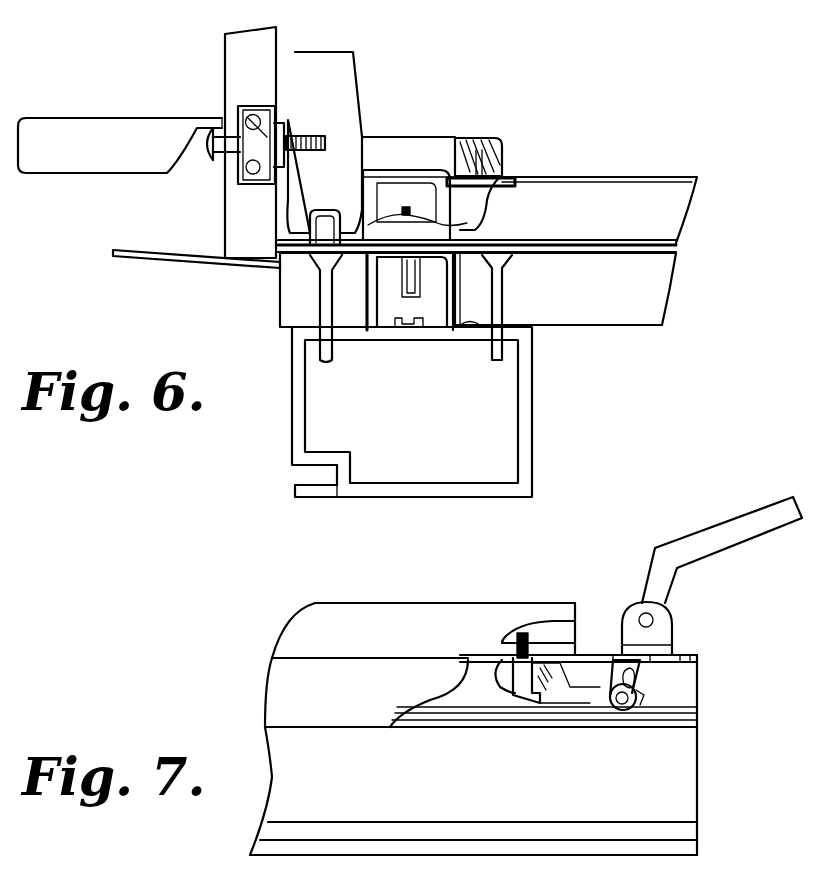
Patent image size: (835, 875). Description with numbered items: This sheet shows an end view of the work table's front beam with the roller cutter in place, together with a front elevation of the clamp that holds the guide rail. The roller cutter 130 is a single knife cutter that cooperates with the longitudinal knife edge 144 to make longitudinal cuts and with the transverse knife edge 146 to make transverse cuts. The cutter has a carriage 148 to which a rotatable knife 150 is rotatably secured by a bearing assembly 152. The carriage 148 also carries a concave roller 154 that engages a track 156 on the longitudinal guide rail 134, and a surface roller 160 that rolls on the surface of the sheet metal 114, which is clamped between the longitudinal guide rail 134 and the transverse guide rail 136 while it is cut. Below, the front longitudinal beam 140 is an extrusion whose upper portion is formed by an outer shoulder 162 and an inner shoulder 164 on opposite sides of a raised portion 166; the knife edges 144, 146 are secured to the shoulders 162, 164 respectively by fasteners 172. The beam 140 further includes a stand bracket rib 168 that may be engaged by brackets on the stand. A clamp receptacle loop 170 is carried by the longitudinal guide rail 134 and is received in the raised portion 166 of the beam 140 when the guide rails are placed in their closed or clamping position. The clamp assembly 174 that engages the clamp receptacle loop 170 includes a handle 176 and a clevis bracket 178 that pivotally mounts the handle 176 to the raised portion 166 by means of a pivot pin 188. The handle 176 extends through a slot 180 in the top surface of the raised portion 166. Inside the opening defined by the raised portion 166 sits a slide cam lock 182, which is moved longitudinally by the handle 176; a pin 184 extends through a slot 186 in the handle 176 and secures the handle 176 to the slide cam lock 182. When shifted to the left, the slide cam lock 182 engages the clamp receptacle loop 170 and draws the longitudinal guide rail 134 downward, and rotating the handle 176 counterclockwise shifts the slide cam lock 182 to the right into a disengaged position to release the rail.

In FIG. 6, the sheet metal 114 is at (638, 237).
In FIG. 6, the roller cutter 130 is at (95, 125).
In FIG. 6, the longitudinal guide rail 134 is at (415, 185).
In FIG. 7, the longitudinal guide rail 134 is at (416, 620).
In FIG. 6, the transverse guide rail 136 is at (608, 205).
In FIG. 6, the front longitudinal beam 140 is at (525, 462).
In FIG. 7, the front longitudinal beam 140 is at (670, 777).
In FIG. 6, the longitudinal knife edge 144 is at (300, 300).
In FIG. 7, the longitudinal knife edge 144 is at (278, 690).
In FIG. 6, the transverse knife edge 146 is at (640, 310).
In FIG. 6, the carriage 148 is at (345, 95).
In FIG. 6, the rotatable knife 150 is at (237, 72).
In FIG. 6, the bearing assembly 152 is at (245, 152).
In FIG. 6, the concave roller 154 is at (497, 180).
In FIG. 6, the track 156 is at (437, 138).
In FIG. 6, the surface roller 160 is at (305, 226).
In FIG. 6, the outer shoulder 162 is at (345, 330).
In FIG. 6, the inner shoulder 164 is at (485, 335).
In FIG. 6, the raised portion 166 is at (455, 243).
In FIG. 7, the raised portion 166 is at (680, 662).
In FIG. 6, the stand bracket rib 168 is at (295, 485).
In FIG. 7, the stand bracket rib 168 is at (660, 838).
In FIG. 6, the clamp receptacle loop 170 is at (425, 320).
In FIG. 7, the clamp receptacle loop 170 is at (520, 677).
In FIG. 6, the fasteners 172 is at (497, 282).
In FIG. 7, the clamp assembly 174 is at (712, 516).
In FIG. 7, the handle 176 is at (703, 550).
In FIG. 7, the clevis bracket 178 is at (630, 632).
In FIG. 7, the slot 180 is at (673, 662).
In FIG. 7, the slide cam lock 182 is at (567, 703).
In FIG. 7, the pin 184 is at (640, 710).
In FIG. 7, the slot 186 is at (612, 677).
In FIG. 7, the pivot pin 188 is at (655, 621).